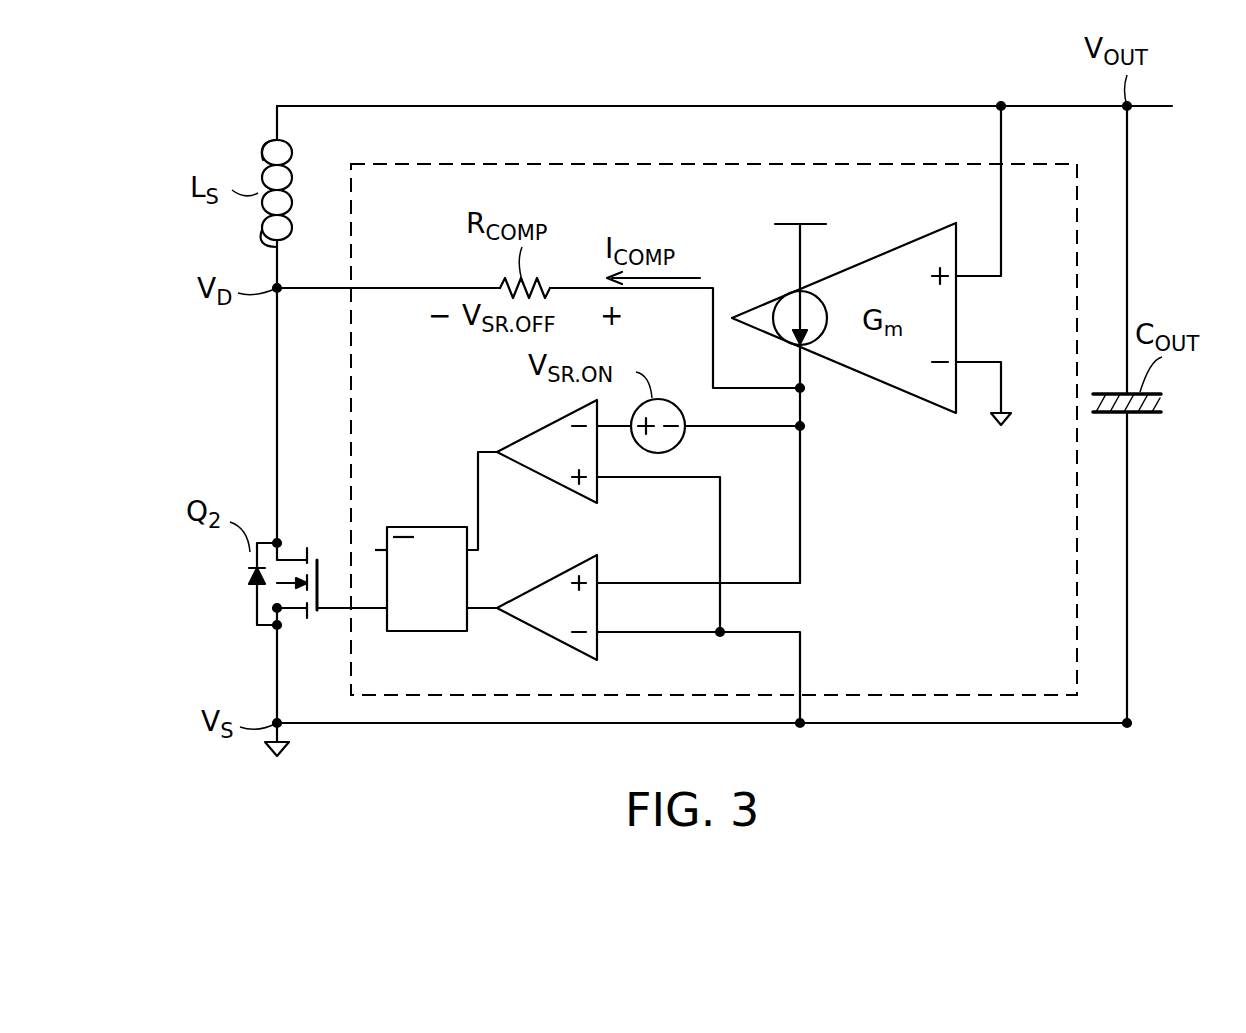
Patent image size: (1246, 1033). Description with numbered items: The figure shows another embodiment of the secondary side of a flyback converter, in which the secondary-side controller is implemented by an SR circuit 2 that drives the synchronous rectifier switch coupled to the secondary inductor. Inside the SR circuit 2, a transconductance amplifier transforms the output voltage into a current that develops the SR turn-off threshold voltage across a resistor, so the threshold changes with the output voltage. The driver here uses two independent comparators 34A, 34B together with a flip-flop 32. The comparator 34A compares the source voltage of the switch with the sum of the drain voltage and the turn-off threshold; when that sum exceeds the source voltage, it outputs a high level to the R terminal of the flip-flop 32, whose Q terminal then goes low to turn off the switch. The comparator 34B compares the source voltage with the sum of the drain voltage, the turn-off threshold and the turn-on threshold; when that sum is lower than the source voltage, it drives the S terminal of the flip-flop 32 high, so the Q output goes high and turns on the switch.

The SR circuit 2 is at (351, 164).
The flip-flop 32 is at (424, 527).
The comparator 34A is at (542, 642).
The comparator 34B is at (548, 425).